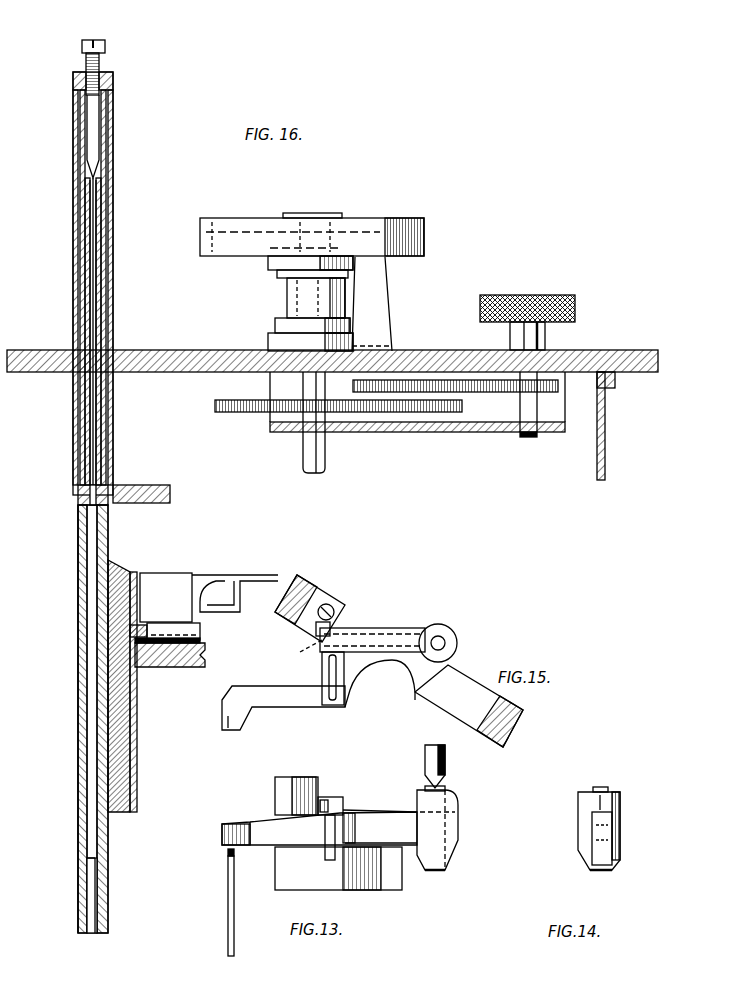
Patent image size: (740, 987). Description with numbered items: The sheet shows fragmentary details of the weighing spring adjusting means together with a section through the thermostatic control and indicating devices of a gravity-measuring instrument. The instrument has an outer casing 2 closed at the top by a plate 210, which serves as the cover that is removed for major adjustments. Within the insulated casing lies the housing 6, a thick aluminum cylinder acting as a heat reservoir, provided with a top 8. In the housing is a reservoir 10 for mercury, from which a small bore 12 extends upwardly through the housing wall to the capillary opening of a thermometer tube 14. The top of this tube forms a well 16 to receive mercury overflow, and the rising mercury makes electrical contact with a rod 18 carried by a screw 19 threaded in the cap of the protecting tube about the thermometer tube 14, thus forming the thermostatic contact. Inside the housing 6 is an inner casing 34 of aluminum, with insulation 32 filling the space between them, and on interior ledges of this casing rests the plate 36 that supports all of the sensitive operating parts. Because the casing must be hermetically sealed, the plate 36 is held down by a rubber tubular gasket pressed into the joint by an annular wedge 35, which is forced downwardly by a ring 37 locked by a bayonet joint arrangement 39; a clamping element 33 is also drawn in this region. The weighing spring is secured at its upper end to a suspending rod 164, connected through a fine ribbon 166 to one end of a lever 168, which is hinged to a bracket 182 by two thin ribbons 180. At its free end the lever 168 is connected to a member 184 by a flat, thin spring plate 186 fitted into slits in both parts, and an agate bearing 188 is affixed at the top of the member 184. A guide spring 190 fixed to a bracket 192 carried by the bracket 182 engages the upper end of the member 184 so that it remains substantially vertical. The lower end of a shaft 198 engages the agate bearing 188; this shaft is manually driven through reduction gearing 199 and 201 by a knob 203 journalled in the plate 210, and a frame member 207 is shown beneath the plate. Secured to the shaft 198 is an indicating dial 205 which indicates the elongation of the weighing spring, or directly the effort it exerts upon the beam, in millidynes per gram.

In FIG. 16, the outer casing 2 is at (605, 450).
In FIG. 16, the housing 6 is at (78, 762).
In FIG. 16, the top 8 is at (137, 487).
In FIG. 16, the reservoir 10 is at (90, 912).
In FIG. 16, the small bore 12 is at (90, 690).
In FIG. 16, the thermometer tube 14 is at (88, 412).
In FIG. 16, the well 16 is at (83, 140).
In FIG. 16, the rod 18 is at (95, 157).
In FIG. 16, the screw 19 is at (100, 47).
In FIG. 16, the insulation 32 is at (118, 574).
In FIG. 16, the clamp 33 is at (130, 630).
In FIG. 16, the inner casing 34 is at (137, 750).
In FIG. 16, the annular wedge 35 is at (161, 628).
In FIG. 16, the plate 36 is at (180, 667).
In FIG. 16, the ring 37 is at (166, 580).
In FIG. 16, the bayonet joint arrangement 39 is at (225, 578).
In FIG. 13, the suspending rod 164 is at (228, 893).
In FIG. 13, the fine ribbon 166 is at (228, 851).
In FIG. 15, the lever 168 is at (250, 688).
In FIG. 13, the lever 168 is at (265, 820).
In FIG. 14, the lever 168 is at (592, 829).
In FIG. 15, the thin ribbons 180 is at (322, 685).
In FIG. 13, the thin ribbons 180 is at (325, 848).
In FIG. 15, the bracket 182 is at (345, 615).
In FIG. 13, the bracket 182 is at (362, 884).
In FIG. 15, the member 184 is at (458, 648).
In FIG. 13, the member 184 is at (458, 825).
In FIG. 14, the member 184 is at (620, 828).
In FIG. 13, the spring plate 186 is at (447, 868).
In FIG. 14, the spring plate 186 is at (615, 852).
In FIG. 15, the agate bearing 188 is at (444, 640).
In FIG. 13, the agate bearing 188 is at (446, 790).
In FIG. 14, the agate bearing 188 is at (608, 790).
In FIG. 15, the guide spring 190 is at (375, 630).
In FIG. 13, the guide spring 190 is at (368, 805).
In FIG. 14, the guide spring 190 is at (620, 806).
In FIG. 15, the bracket 192 is at (342, 624).
In FIG. 13, the bracket 192 is at (330, 800).
In FIG. 16, the shaft 198 is at (325, 455).
In FIG. 13, the shaft 198 is at (425, 762).
In FIG. 16, the reduction gearing 199 is at (240, 412).
In FIG. 16, the reduction gearing 201 is at (518, 395).
In FIG. 16, the knob 203 is at (560, 297).
In FIG. 16, the indicating dial 205 is at (424, 234).
In FIG. 16, the frame plate 207 is at (548, 432).
In FIG. 16, the plate 210 is at (620, 350).